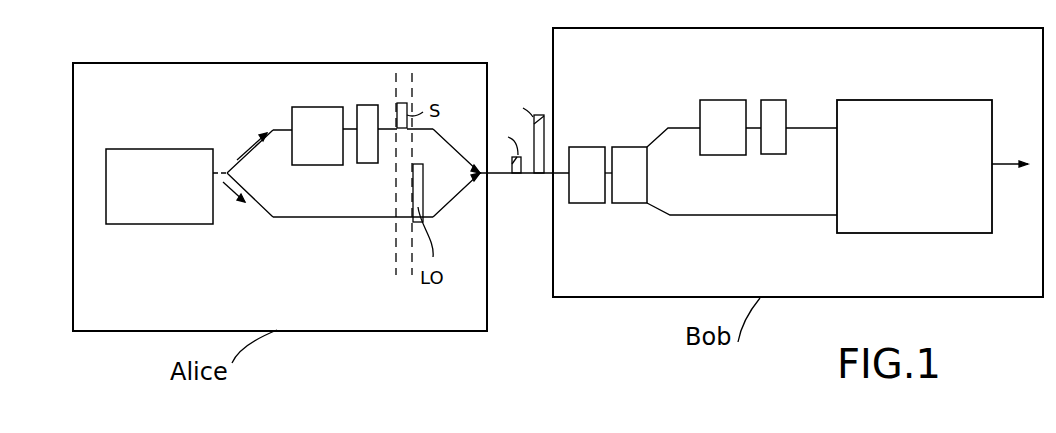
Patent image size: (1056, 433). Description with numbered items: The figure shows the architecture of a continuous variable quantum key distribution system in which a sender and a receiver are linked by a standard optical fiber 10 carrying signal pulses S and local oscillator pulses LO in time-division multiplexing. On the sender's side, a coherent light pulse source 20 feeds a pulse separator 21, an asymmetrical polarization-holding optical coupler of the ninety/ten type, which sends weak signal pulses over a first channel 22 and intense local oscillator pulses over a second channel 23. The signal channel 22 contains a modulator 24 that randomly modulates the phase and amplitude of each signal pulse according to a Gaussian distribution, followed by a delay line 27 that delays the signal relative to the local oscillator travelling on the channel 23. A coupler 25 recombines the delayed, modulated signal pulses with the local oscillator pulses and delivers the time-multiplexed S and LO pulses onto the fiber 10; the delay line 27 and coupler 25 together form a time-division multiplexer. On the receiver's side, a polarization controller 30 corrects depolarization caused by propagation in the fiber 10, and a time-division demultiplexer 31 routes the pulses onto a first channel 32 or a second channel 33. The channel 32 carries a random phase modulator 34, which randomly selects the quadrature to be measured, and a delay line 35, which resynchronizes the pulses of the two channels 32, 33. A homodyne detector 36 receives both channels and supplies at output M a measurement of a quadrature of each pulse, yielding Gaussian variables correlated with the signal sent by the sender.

The optical fiber 10 is at (519, 185).
The coherent light pulse source 20 is at (157, 150).
The pulse separator 21 is at (226, 193).
The first channel 22 is at (278, 128).
The second channel 23 is at (300, 223).
The modulator 24 is at (327, 115).
The coupler 25 is at (470, 192).
The delay line 27 is at (370, 112).
The polarization controller 30 is at (592, 145).
The time-division demultiplexer 31 is at (620, 150).
The first channel 32 is at (653, 138).
The second channel 33 is at (655, 207).
The random phase modulator 34 is at (705, 98).
The delay line 35 is at (767, 98).
The homodyne detector 36 is at (928, 233).